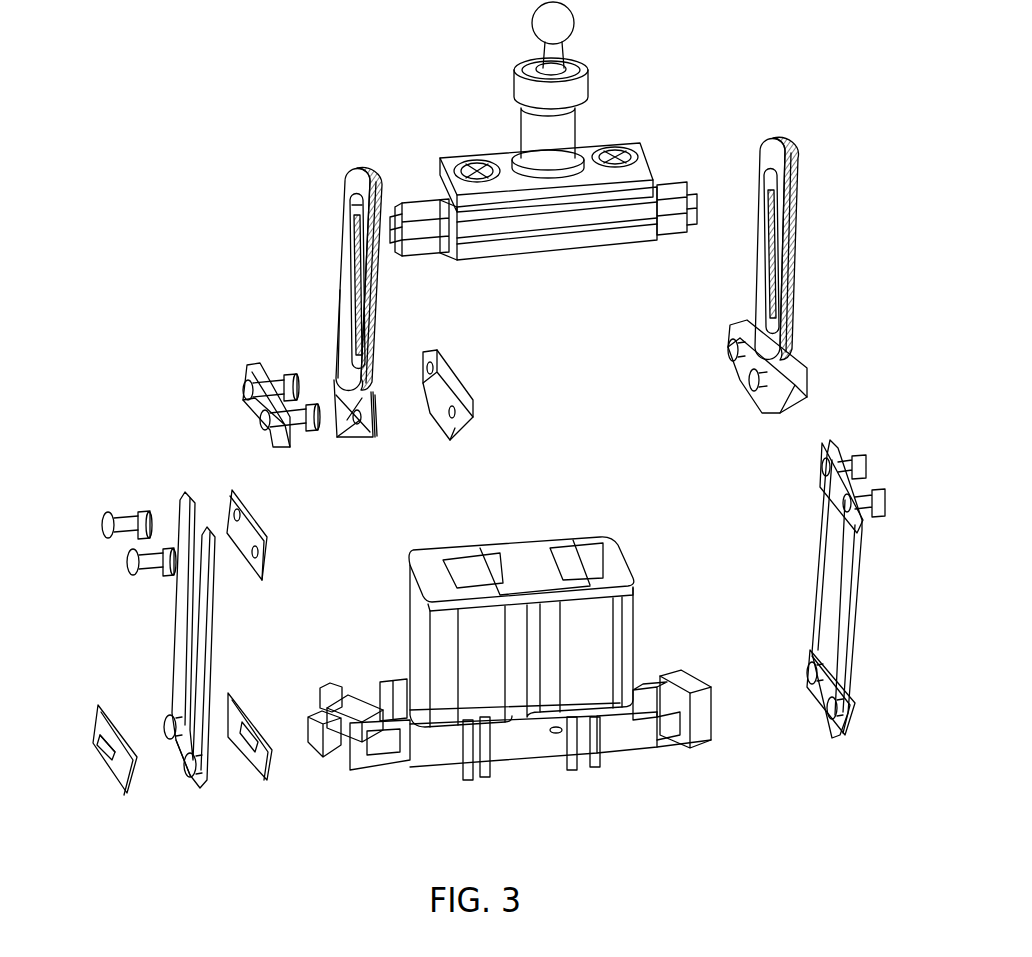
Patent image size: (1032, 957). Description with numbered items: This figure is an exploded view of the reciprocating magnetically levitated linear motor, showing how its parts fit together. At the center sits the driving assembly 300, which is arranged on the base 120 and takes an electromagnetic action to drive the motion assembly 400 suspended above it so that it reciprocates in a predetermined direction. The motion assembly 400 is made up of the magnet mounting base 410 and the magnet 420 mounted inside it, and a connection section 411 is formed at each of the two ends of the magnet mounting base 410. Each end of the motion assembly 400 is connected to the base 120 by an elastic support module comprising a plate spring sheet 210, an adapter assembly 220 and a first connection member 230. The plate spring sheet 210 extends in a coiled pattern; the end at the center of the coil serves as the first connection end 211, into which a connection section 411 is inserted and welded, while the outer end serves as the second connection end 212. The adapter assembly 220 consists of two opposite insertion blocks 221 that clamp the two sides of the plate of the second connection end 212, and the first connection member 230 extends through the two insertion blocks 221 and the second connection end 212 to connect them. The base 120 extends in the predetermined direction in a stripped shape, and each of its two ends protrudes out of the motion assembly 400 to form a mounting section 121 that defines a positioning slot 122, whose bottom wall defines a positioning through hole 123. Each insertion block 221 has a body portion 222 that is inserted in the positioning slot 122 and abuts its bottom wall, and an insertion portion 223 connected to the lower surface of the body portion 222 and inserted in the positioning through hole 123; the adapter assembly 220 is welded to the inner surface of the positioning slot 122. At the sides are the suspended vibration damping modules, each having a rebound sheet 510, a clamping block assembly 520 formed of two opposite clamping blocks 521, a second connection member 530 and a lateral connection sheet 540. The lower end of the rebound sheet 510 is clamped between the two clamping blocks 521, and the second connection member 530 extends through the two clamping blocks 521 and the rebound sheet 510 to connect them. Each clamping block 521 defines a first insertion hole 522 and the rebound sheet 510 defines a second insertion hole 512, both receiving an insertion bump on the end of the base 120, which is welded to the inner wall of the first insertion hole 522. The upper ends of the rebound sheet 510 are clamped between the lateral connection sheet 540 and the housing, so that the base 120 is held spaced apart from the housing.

The base 120 is at (627, 740).
The mounting section 121 is at (388, 770).
The positioning slot 122 is at (363, 706).
The positioning through hole 123 is at (677, 733).
The plate spring sheet 210 is at (343, 303).
The first connection end 211 is at (350, 208).
The second connection end 212 is at (353, 408).
The adapter assembly 220 is at (793, 390).
The insertion block 221 is at (250, 403).
The body portion 222 is at (423, 363).
The insertion portion 223 is at (447, 423).
The first connection member 230 is at (240, 386).
The driving assembly 300 is at (613, 573).
The motion assembly 400 is at (606, 124).
The magnet mounting base 410 is at (568, 218).
The connection section 411 is at (395, 213).
The magnet 420 is at (486, 250).
The rebound sheet 510 is at (180, 637).
The second insertion hole 512 is at (179, 745).
The clamping block assembly 520 is at (857, 713).
The clamping block 521 is at (247, 700).
The first insertion hole 522 is at (105, 740).
The second connection member 530 is at (177, 720).
The lateral connection sheet 540 is at (243, 530).